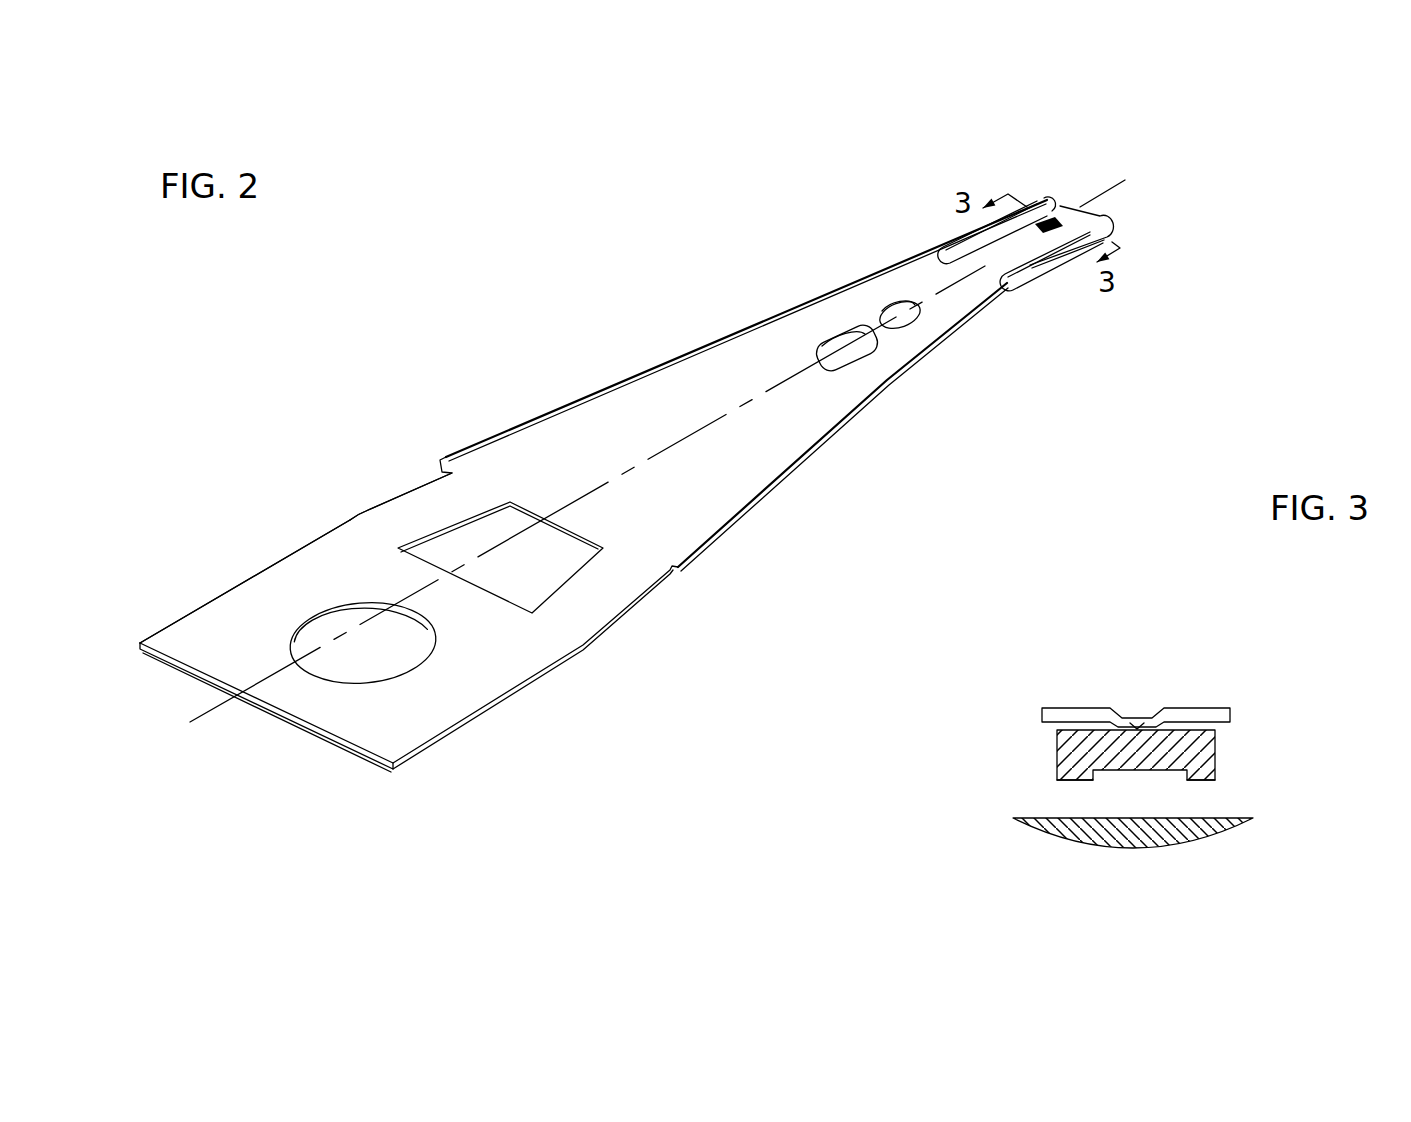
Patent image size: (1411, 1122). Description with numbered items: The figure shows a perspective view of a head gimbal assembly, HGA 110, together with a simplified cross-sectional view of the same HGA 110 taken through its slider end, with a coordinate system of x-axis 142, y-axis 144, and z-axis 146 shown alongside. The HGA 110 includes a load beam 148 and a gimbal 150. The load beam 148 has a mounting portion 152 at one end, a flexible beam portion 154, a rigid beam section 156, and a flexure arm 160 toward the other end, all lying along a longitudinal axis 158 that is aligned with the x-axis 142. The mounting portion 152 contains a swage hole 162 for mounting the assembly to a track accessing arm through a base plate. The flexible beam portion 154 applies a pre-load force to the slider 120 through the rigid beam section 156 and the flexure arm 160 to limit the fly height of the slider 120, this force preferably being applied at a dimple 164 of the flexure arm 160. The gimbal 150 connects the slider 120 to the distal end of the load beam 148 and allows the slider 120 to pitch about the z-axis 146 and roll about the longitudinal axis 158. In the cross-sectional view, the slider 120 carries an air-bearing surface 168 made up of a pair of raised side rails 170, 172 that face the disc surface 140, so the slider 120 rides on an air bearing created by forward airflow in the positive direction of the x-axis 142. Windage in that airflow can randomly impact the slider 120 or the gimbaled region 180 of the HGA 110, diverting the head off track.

In FIG. 2, the HGA 110 is at (573, 337).
In FIG. 2, the slider 120 is at (1113, 232).
In FIG. 3, the slider 120 is at (1215, 753).
In FIG. 3, the disc surface 140 is at (1237, 812).
In FIG. 2, the x-axis 142 is at (1125, 180).
In FIG. 2, the y-axis 144 is at (1125, 180).
In FIG. 3, the y-axis 144 is at (1137, 660).
In FIG. 2, the z-axis 146 is at (1125, 180).
In FIG. 3, the z-axis 146 is at (1137, 660).
In FIG. 2, the load beam 148 is at (567, 403).
In FIG. 2, the gimbal 150 is at (1027, 283).
In FIG. 2, the mounting portion 152 is at (250, 577).
In FIG. 2, the flexible beam portion 154 is at (400, 505).
In FIG. 2, the rigid beam section 156 is at (757, 355).
In FIG. 2, the longitudinal axis 158 is at (727, 410).
In FIG. 2, the flexure arm 160 is at (982, 236).
In FIG. 2, the swage hole 162 is at (363, 660).
In FIG. 2, the dimple 164 is at (1060, 207).
In FIG. 3, the dimple 164 is at (1130, 720).
In FIG. 3, the air-bearing surface 168 is at (1137, 778).
In FIG. 3, the raised side rail 170 is at (1075, 782).
In FIG. 3, the raised side rail 172 is at (1200, 780).
In FIG. 2, the gimbaled region 180 is at (1070, 283).